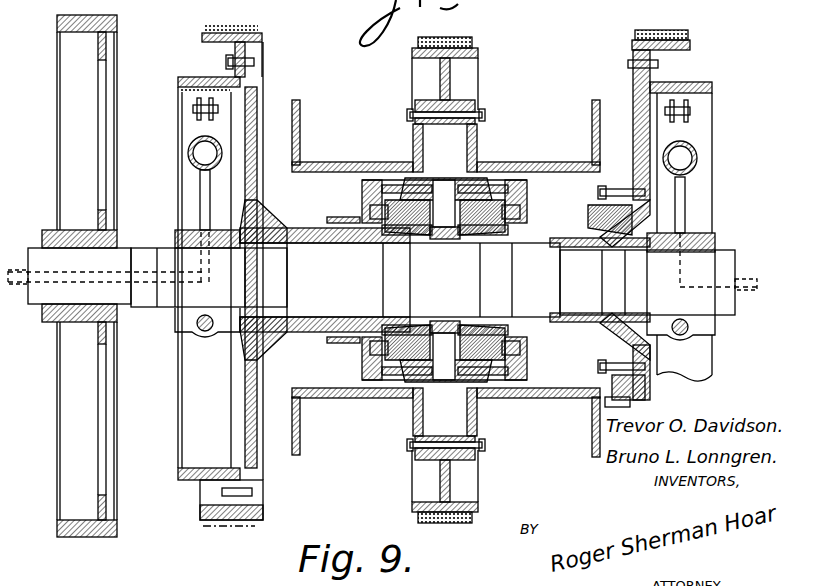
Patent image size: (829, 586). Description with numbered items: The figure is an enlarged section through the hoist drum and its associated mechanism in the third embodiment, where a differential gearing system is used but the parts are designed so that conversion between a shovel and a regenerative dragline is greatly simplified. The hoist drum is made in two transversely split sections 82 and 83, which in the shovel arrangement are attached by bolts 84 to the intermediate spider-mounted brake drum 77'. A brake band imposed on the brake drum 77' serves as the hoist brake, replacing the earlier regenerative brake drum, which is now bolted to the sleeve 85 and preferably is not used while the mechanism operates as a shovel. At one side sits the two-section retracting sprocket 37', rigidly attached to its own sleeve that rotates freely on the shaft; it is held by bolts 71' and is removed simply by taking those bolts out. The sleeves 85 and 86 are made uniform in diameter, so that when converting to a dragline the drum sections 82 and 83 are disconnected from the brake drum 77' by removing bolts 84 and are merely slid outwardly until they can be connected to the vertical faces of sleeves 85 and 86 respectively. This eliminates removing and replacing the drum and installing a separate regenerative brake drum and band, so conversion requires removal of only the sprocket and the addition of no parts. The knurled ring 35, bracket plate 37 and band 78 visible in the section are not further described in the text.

The knurled ring 35 is at (222, 27).
The bracket plate 37 is at (241, 38).
The retracting sprocket 37' is at (644, 215).
The bolts 71' is at (601, 295).
The brake drum 77' is at (480, 277).
The knurled band 78 is at (458, 37).
The hoist drum section 82 is at (360, 140).
The hoist drum section 83 is at (528, 162).
The bolts 84 is at (486, 112).
The sleeve 85 is at (322, 228).
The sleeve 86 is at (594, 228).